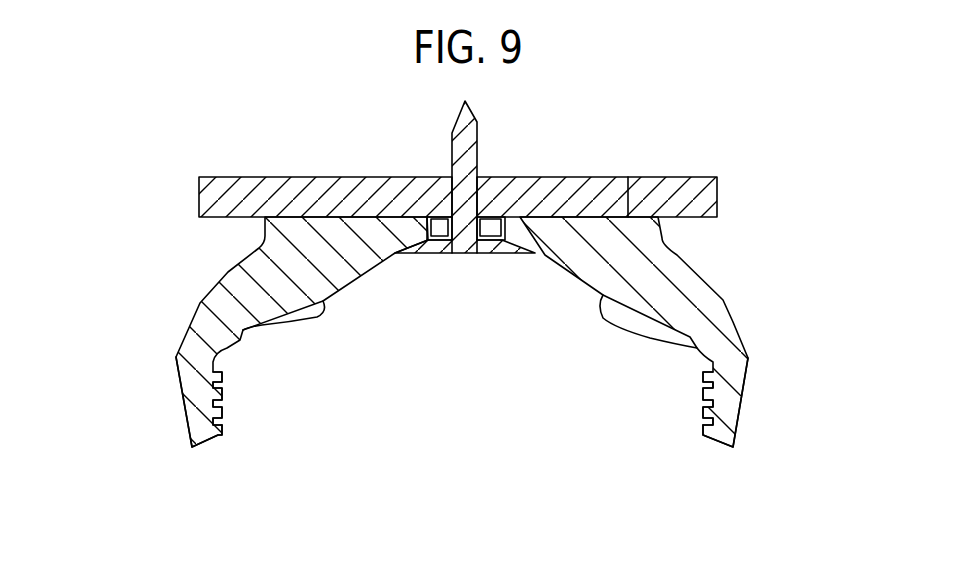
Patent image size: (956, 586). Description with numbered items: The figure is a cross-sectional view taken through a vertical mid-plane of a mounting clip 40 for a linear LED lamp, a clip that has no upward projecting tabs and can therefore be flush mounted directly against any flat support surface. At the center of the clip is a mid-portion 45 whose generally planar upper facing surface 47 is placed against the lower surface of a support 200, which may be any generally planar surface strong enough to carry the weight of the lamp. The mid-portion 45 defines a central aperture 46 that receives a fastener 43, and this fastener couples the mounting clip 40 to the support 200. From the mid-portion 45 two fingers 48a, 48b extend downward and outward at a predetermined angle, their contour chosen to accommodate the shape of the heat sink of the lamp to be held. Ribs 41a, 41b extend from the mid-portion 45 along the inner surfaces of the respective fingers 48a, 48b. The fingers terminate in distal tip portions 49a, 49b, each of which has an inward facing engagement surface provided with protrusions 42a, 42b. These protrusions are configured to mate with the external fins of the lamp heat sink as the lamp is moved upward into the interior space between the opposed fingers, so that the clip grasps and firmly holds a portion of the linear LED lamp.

The support 200 is at (703, 177).
The upper facing surface 47 is at (628, 177).
The fastener 43 is at (480, 133).
The mid-portion 45 is at (523, 235).
The central aperture 46 is at (417, 253).
The mounting clip 40 is at (449, 349).
The finger 48a is at (228, 272).
The finger 48b is at (690, 267).
The rib 41a is at (280, 320).
The rib 41b is at (690, 345).
The distal tip portion 49a is at (183, 395).
The distal tip portion 49b is at (742, 396).
The protrusions 42a is at (192, 447).
The protrusions 42b is at (703, 433).